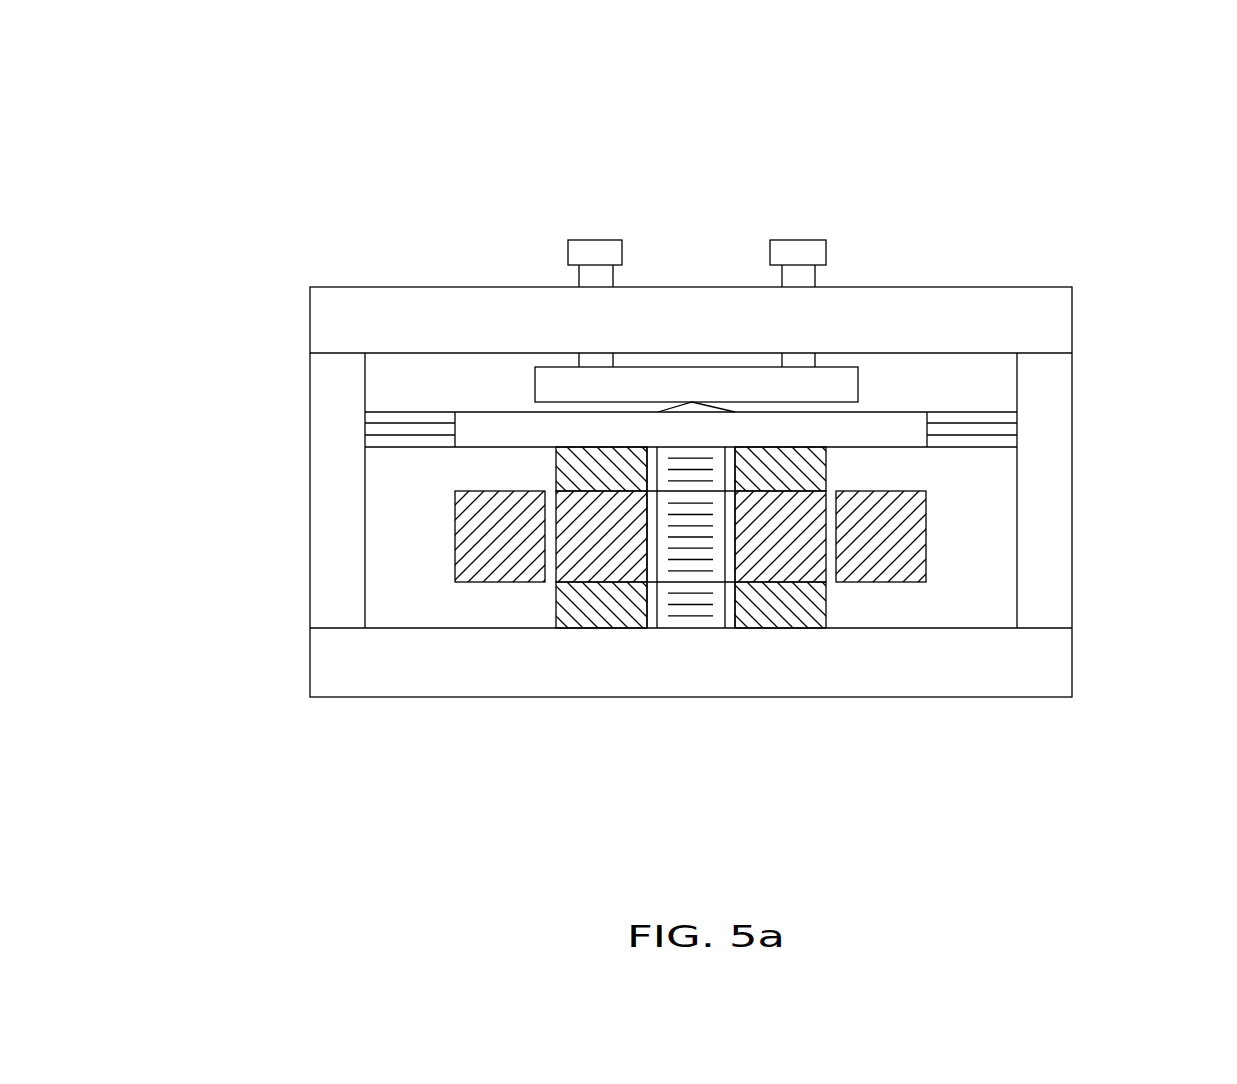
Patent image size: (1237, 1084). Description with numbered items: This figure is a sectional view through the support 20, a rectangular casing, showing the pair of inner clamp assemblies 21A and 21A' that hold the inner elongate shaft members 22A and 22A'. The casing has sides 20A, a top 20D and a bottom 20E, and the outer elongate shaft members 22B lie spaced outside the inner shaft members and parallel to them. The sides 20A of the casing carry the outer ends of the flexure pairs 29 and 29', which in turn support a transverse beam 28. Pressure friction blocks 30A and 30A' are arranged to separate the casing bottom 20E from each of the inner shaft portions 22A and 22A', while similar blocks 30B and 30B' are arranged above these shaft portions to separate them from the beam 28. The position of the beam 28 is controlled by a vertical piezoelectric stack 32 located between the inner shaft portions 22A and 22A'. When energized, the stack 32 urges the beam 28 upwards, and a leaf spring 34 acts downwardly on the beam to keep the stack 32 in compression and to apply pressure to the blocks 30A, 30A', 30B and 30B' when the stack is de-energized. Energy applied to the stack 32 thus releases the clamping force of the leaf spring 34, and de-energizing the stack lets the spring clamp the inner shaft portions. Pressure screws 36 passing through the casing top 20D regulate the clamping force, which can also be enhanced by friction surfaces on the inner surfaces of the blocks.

The support 20 is at (333, 277).
The sides 20A is at (343, 537).
The top 20D is at (950, 312).
The bottom 20E is at (970, 660).
The inner clamp assembly 21A is at (437, 288).
The inner clamp assembly 21A' is at (957, 285).
The inner elongate shaft member 22A is at (508, 640).
The inner elongate shaft member 22A' is at (893, 643).
The outer elongate shaft member 22B is at (500, 548).
The transverse beam 28 is at (872, 433).
The flexure pair 29 is at (322, 396).
The flexure pair 29' is at (1076, 373).
The pressure friction block 30A is at (558, 697).
The pressure friction block 30A' is at (793, 697).
The pressure friction block 30B is at (413, 477).
The pressure friction block 30B' is at (985, 458).
The piezoelectric stack 32 is at (697, 603).
The leaf spring 34 is at (590, 377).
The pressure screws 36 is at (792, 253).